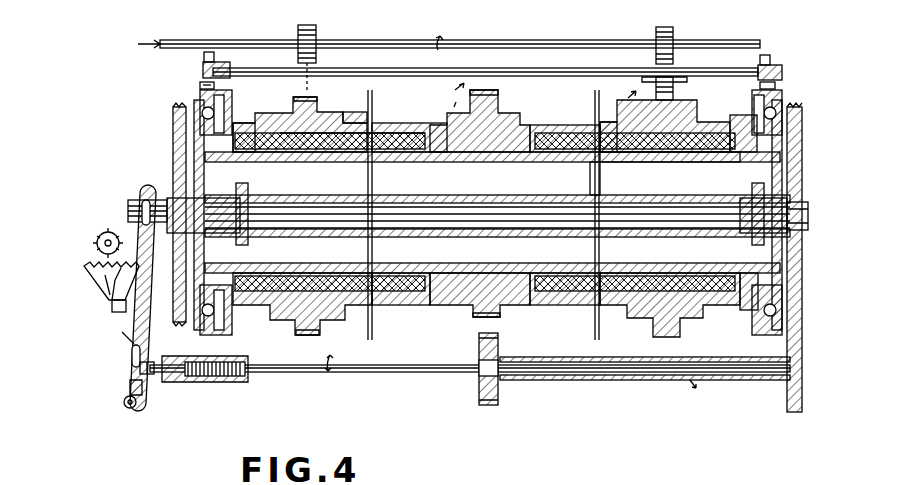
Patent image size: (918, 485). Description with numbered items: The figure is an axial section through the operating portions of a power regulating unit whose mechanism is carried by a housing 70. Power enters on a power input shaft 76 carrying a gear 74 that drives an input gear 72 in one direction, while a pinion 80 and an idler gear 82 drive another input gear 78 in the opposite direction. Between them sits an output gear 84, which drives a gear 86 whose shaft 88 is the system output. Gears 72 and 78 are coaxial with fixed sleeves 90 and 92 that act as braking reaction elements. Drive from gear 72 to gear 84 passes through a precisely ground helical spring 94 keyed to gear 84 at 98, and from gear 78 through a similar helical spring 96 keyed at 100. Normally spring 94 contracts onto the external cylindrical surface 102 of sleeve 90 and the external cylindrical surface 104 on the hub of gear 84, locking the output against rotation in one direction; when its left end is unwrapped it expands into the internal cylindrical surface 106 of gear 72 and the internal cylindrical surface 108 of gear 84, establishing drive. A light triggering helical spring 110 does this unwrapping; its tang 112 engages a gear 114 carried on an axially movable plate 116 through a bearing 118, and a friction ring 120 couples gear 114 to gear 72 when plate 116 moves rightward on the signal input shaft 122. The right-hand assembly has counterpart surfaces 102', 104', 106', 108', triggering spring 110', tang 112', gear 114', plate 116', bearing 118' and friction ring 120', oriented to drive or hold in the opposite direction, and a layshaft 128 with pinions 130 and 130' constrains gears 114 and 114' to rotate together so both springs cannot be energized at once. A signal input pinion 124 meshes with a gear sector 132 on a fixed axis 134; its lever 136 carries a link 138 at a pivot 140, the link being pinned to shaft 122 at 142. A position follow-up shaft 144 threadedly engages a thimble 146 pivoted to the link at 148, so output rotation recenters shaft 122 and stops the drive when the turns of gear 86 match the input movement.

The housing 70 is at (172, 117).
The input gear 72 is at (321, 112).
The gear 74 is at (316, 30).
The power input shaft 76 is at (214, 44).
The input gear 78 is at (682, 106).
The pinion 80 is at (673, 28).
The idler gear 82 is at (673, 71).
The output gear 84 is at (498, 98).
The gear 86 is at (487, 403).
The shaft 88 is at (594, 381).
The fixed sleeve 90 is at (232, 163).
The fixed sleeve 92 is at (596, 176).
The helical spring 94 is at (372, 150).
The helical spring 96 is at (550, 140).
The keyed end of spring 94 98 is at (433, 318).
The keyed end of spring 96 100 is at (518, 316).
The external cylindrical surface 102 is at (330, 162).
The external cylindrical surface 104 is at (334, 228).
The internal cylindrical surface 106 is at (364, 111).
The internal cylindrical surface 108 is at (409, 128).
The triggering helical spring 110 is at (492, 218).
The tang 112 is at (195, 314).
The gear 114 is at (168, 85).
The axially movable plate 116 is at (173, 215).
The bearing 118 is at (177, 112).
The friction ring 120 is at (256, 116).
The signal input shaft 122 is at (310, 229).
The signal input pinion 124 is at (101, 228).
The layshaft 128 is at (518, 71).
The pinion 130 is at (190, 65).
The gear sector 132 is at (86, 266).
The fixed axis 134 is at (118, 316).
The lever 136 is at (105, 367).
The link 138 is at (122, 334).
The pivot 140 is at (130, 406).
The pin connection 142 is at (137, 198).
The position follow-up shaft 144 is at (354, 373).
The thimble 146 is at (205, 380).
The pivot 148 is at (118, 387).
The external cylindrical surface 102' is at (635, 162).
The external cylindrical surface 104' is at (635, 228).
The internal cylindrical surface 106' is at (617, 210).
The internal cylindrical surface 108' is at (607, 128).
The triggering helical spring 110' is at (670, 170).
The tang 112' is at (800, 294).
The gear 114' is at (796, 64).
The axially movable plate 116' is at (808, 215).
The bearing 118' is at (795, 97).
The friction ring 120' is at (789, 194).
The pinion 130' is at (758, 54).